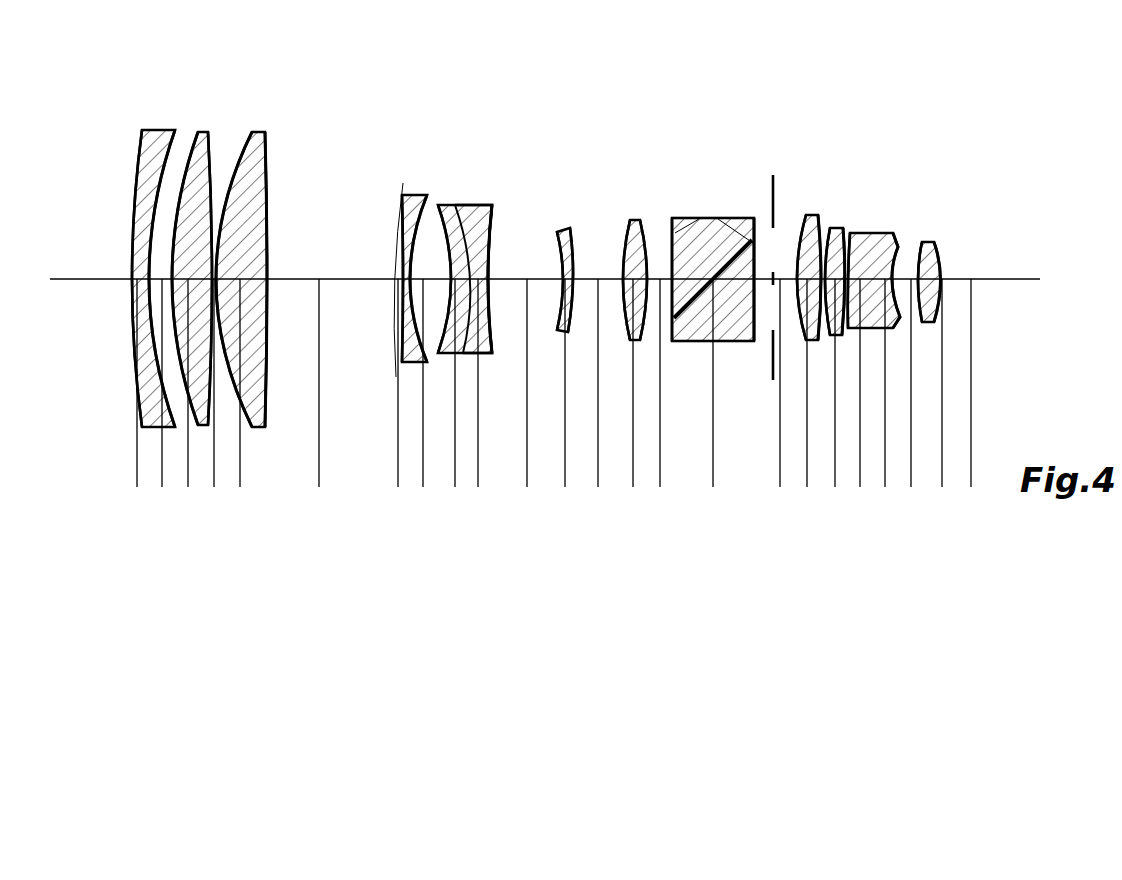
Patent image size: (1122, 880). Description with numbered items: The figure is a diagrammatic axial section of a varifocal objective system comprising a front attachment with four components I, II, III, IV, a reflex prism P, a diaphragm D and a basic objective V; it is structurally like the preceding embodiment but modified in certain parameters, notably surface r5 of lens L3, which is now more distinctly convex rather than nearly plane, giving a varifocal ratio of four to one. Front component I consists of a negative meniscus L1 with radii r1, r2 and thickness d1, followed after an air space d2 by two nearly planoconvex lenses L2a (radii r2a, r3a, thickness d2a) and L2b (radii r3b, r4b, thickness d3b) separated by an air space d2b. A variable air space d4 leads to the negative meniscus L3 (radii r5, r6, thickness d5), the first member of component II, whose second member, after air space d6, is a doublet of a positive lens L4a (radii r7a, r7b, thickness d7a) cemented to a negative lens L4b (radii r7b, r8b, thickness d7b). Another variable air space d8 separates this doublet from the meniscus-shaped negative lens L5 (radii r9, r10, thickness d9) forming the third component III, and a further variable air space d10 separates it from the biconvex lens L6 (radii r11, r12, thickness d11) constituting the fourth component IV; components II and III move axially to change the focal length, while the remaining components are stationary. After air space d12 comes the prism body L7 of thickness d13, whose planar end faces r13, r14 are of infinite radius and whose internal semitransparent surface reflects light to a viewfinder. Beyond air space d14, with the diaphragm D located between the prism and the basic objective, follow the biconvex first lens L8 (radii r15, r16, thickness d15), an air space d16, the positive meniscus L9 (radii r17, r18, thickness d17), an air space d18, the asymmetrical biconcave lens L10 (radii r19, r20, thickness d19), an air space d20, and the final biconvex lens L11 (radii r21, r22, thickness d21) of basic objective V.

The front component I is at (265, 540).
The second component II is at (487, 540).
The third component III is at (580, 540).
The fourth component IV is at (648, 540).
The basic objective V is at (978, 540).
The reflex prism P is at (728, 540).
The diaphragm D is at (773, 378).
The first lens L1 is at (143, 284).
The nearly planoconvex lens L2a is at (196, 284).
The nearly planoconvex lens L2b is at (248, 284).
The negative meniscus L3 is at (400, 284).
The positive lens L4a is at (459, 284).
The negative lens L4b is at (484, 284).
The negative lens L5 is at (566, 284).
The biconvex lens L6 is at (637, 284).
The prism body L7 is at (713, 284).
The biconvex first lens L8 is at (811, 284).
The positive meniscus L9 is at (859, 284).
The asymmetrical biconcave lens L10 is at (894, 284).
The final lens L11 is at (957, 284).
The radius r1 is at (137, 145).
The radius r2 is at (152, 130).
The radius r2a is at (185, 165).
The radius r3a is at (203, 132).
The radius r3b is at (237, 158).
The radius r4b is at (260, 132).
The surface radius r5 is at (398, 215).
The radius r6 is at (412, 195).
The radius r7a is at (438, 205).
The radius r7b is at (466, 205).
The radius r8b is at (491, 205).
The radius r9 is at (557, 255).
The radius r10 is at (570, 236).
The radius r11 is at (630, 236).
The radius r12 is at (641, 238).
The planar end face r13 is at (698, 218).
The planar end face r14 is at (724, 218).
The radius r15 is at (805, 233).
The radius r16 is at (821, 215).
The radius r17 is at (829, 228).
The radius r18 is at (843, 228).
The radius r19 is at (851, 233).
The radius r20 is at (896, 233).
The radius r21 is at (919, 242).
The radius r22 is at (940, 243).
The thickness d1 is at (138, 398).
The air space d2 is at (164, 398).
The thickness d2a is at (192, 398).
The air space d2b is at (220, 398).
The thickness d3b is at (247, 398).
The variable air space d4 is at (320, 398).
The thickness d5 is at (400, 398).
The air space d6 is at (426, 398).
The thickness d7a is at (458, 398).
The thickness d7b is at (486, 398).
The variable air space d8 is at (529, 398).
The thickness d9 is at (567, 398).
The variable air space d10 is at (602, 398).
The thickness d11 is at (638, 398).
The air space d12 is at (668, 398).
The thickness d13 is at (718, 398).
The air space d14 is at (783, 398).
The thickness d15 is at (812, 398).
The air space d16 is at (840, 398).
The thickness d17 is at (866, 398).
The air space d18 is at (893, 398).
The thickness d19 is at (919, 398).
The air space d20 is at (948, 398).
The thickness d21 is at (979, 398).